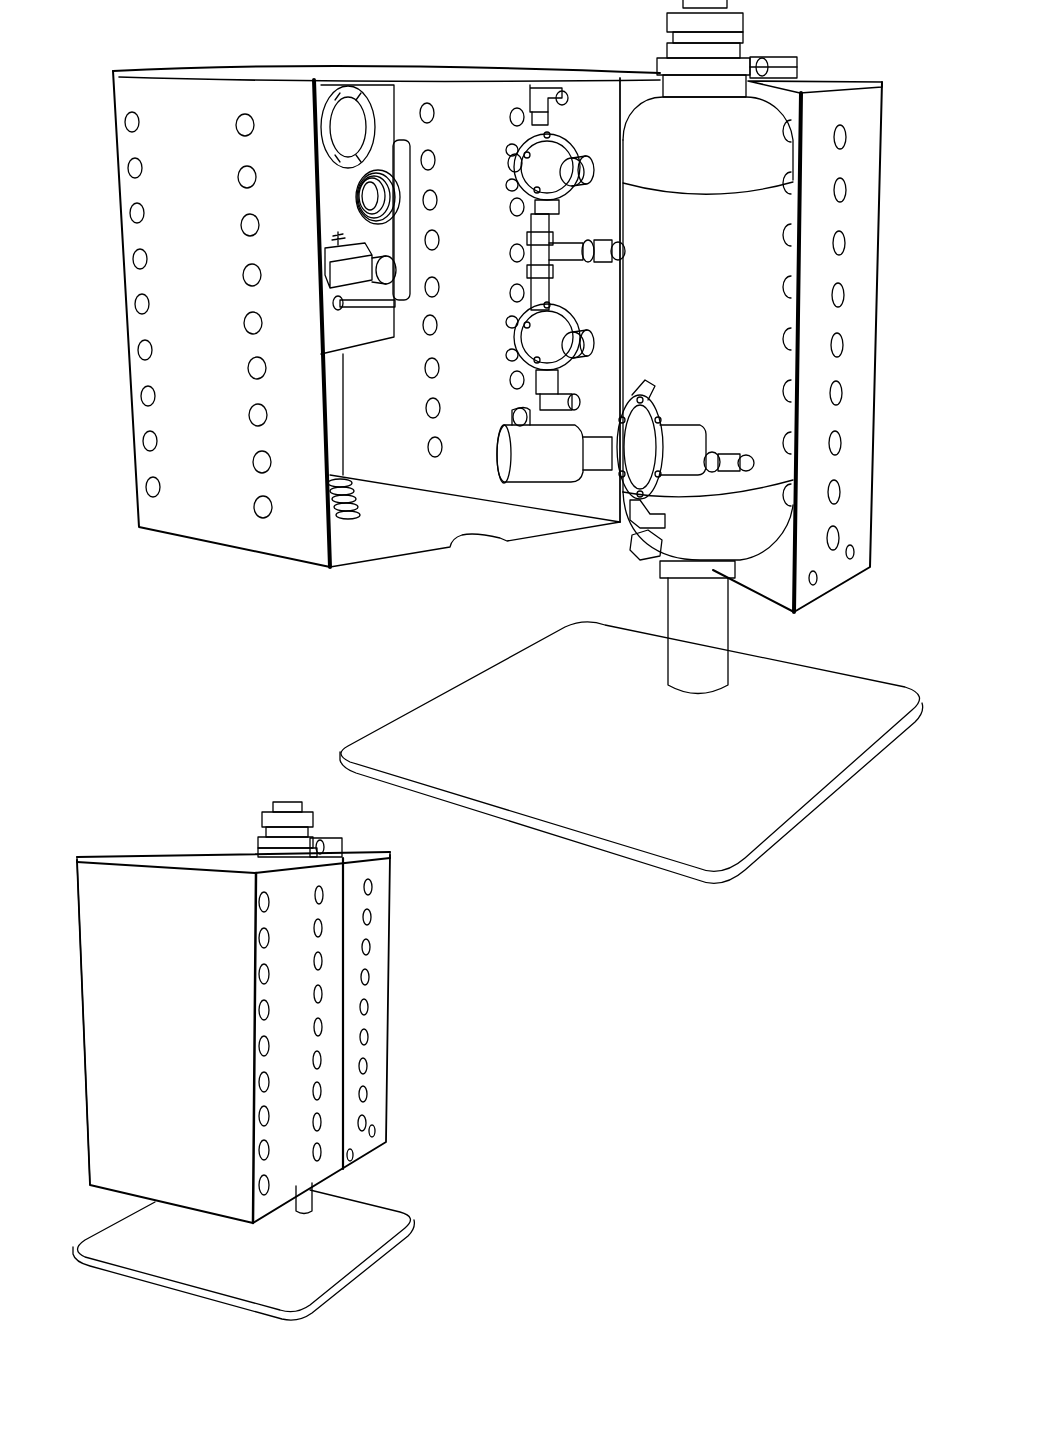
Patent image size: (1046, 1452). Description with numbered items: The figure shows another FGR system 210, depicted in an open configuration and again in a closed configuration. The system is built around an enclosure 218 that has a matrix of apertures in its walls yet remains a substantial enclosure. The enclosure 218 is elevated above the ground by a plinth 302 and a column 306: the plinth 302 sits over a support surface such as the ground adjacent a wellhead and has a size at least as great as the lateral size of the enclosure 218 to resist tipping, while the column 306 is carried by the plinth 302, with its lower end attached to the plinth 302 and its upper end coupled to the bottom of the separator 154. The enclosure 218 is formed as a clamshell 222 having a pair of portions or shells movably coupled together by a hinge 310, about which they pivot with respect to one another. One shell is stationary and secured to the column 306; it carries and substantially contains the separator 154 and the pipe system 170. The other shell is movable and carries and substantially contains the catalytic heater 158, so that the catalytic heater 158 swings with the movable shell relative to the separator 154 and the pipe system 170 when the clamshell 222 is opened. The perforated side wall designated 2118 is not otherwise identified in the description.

In FIG. 10, the clamshell 222 is at (180, 112).
In FIG. 11, the clamshell 222 is at (123, 908).
In FIG. 10, the catalytic heater 158 is at (385, 100).
In FIG. 10, the hinge 310 is at (620, 85).
In FIG. 10, the separator 154 is at (737, 277).
In FIG. 10, the enclosure 218 is at (190, 522).
In FIG. 10, the pipe system 170 is at (490, 368).
In FIG. 10, the FGR system 210 is at (320, 616).
In FIG. 11, the FGR system 210 is at (403, 1068).
In FIG. 10, the column 306 is at (703, 633).
In FIG. 11, the column 306 is at (295, 1210).
In FIG. 10, the plinth 302 is at (760, 790).
In FIG. 11, the plinth 302 is at (330, 1262).
In FIG. 11, the perforated panel 2118 is at (363, 943).